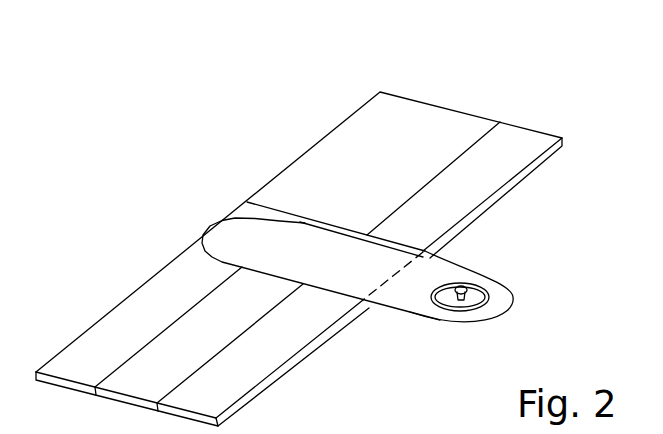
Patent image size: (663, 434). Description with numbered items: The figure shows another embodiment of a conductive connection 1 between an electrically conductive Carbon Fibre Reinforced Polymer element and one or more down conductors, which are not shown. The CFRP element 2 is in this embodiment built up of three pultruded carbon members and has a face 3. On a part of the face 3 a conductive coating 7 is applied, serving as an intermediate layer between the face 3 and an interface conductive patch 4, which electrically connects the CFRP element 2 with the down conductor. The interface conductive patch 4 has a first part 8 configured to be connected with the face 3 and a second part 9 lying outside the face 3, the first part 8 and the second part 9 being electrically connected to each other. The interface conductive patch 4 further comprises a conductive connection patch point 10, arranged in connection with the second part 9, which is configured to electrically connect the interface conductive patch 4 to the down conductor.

The conductive connection 1 is at (257, 148).
The CFRP element 2 is at (397, 112).
The face 3 is at (455, 133).
The interface conductive patch 4 is at (413, 274).
The conductive coating 7 is at (190, 253).
The first part 8 is at (287, 252).
The second part 9 is at (418, 300).
The conductive connection patch point 10 is at (513, 292).